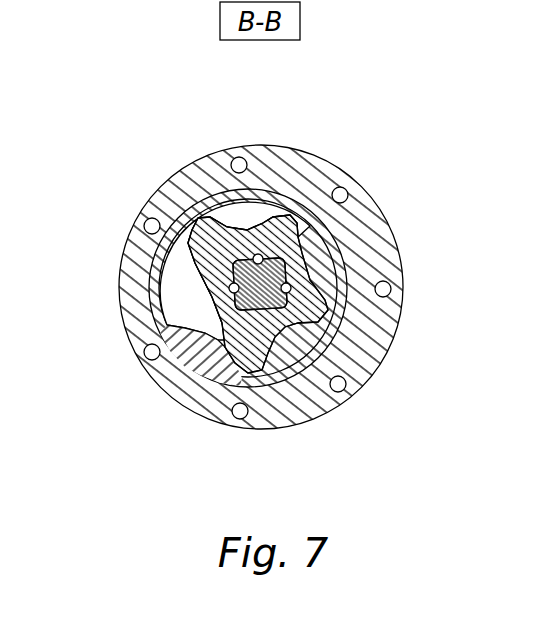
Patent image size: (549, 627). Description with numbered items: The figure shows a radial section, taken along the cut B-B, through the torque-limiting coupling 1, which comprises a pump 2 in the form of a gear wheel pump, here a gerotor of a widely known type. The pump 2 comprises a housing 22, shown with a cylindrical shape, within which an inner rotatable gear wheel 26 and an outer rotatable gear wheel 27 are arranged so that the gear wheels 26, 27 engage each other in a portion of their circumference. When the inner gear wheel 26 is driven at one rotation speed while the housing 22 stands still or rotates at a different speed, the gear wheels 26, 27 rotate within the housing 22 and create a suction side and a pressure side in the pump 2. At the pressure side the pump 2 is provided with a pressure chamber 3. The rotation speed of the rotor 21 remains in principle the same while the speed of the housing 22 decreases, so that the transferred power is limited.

The torque-limiting coupling 1 is at (270, 277).
The pump 2 is at (296, 251).
The pressure chamber 3 is at (182, 311).
The rotor 21 is at (284, 345).
The housing 22 is at (368, 250).
The inner rotatable gear wheel 26 is at (192, 258).
The outer rotatable gear wheel 27 is at (197, 357).